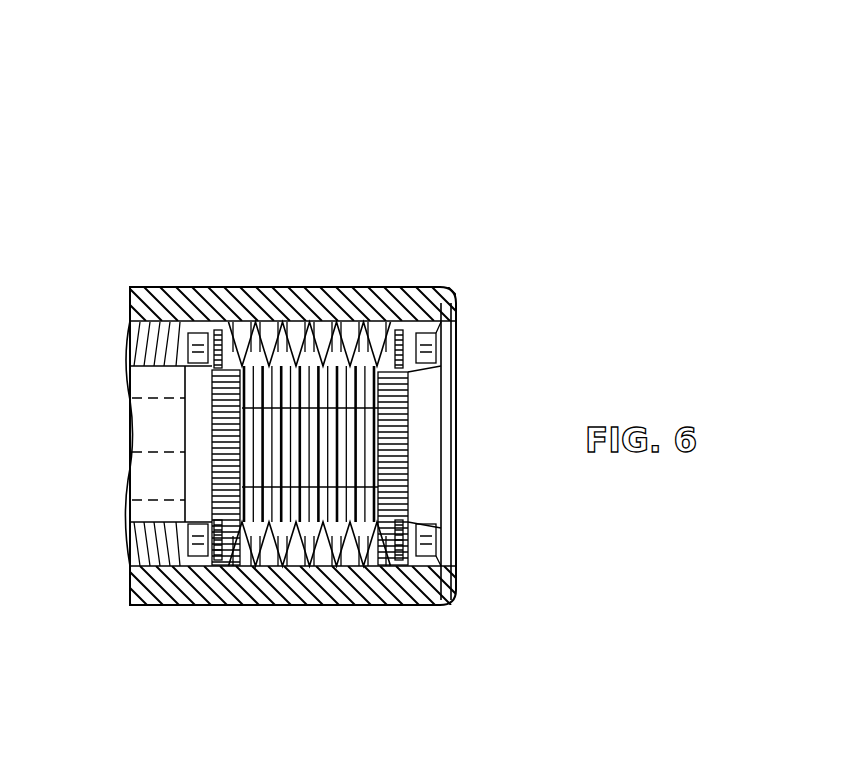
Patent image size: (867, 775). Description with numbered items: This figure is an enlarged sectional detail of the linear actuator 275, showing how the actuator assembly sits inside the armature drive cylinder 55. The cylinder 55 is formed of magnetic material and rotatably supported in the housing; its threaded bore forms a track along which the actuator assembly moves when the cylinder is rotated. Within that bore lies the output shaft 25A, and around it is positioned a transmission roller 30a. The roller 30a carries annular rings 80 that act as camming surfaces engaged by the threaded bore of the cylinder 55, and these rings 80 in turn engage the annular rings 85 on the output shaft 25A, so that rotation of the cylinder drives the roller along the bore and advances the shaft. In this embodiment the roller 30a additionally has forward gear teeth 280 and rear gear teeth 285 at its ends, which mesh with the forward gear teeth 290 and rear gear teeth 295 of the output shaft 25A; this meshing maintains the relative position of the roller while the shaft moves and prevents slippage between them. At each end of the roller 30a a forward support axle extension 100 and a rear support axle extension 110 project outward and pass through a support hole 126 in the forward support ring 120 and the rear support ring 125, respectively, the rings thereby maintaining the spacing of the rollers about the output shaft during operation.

The linear actuator 275 is at (449, 118).
The armature drive cylinder 55 is at (415, 288).
The transmission roller 30a is at (353, 336).
The annular rings 80 is at (283, 372).
The annular rings 85 is at (315, 427).
The forward gear teeth 290 is at (212, 434).
The rear gear teeth 295 is at (408, 424).
The forward gear teeth 280 is at (221, 330).
The rear gear teeth 285 is at (398, 330).
The forward support axle extension 100 is at (197, 333).
The rear support axle extension 110 is at (436, 340).
The support hole 126 is at (190, 548).
The rear support ring 125 is at (437, 516).
The forward support ring 120 is at (160, 494).
The output shaft 25A is at (142, 388).